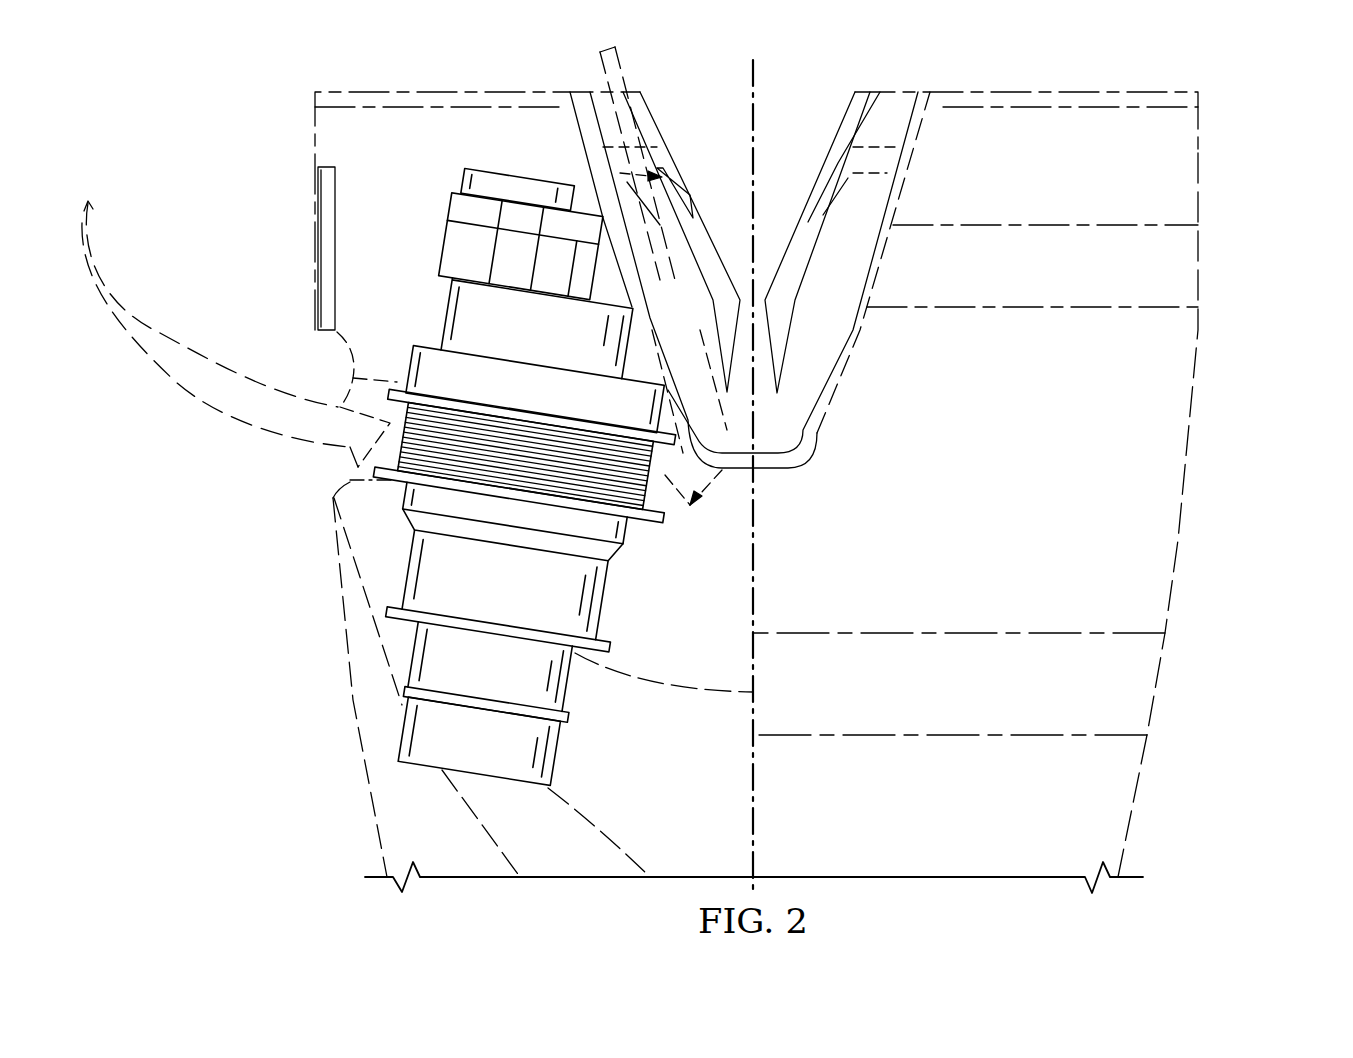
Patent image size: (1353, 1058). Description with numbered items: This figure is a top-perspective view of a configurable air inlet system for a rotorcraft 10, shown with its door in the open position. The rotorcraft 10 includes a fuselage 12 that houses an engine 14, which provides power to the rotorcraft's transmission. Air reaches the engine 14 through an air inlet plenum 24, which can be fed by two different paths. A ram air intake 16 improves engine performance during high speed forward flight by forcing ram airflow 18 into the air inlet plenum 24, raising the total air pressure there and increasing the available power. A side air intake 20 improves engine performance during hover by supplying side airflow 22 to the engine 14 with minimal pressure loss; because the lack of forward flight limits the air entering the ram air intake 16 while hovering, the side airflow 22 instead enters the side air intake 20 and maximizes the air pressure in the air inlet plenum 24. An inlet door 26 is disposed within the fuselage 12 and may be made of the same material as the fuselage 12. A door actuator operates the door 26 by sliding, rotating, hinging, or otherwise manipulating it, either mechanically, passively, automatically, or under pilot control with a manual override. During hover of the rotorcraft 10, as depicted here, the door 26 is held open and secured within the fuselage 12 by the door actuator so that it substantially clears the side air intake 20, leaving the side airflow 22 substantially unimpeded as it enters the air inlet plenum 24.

The rotorcraft 10 is at (1262, 152).
The fuselage 12 is at (1173, 572).
The engine 14 is at (400, 728).
The ram air intake 16 is at (638, 78).
The ram airflow 18 is at (600, 62).
The side air intake 20 is at (312, 468).
The side airflow 22 is at (180, 382).
The air inlet plenum 24 is at (335, 374).
The inlet door 26 is at (337, 248).